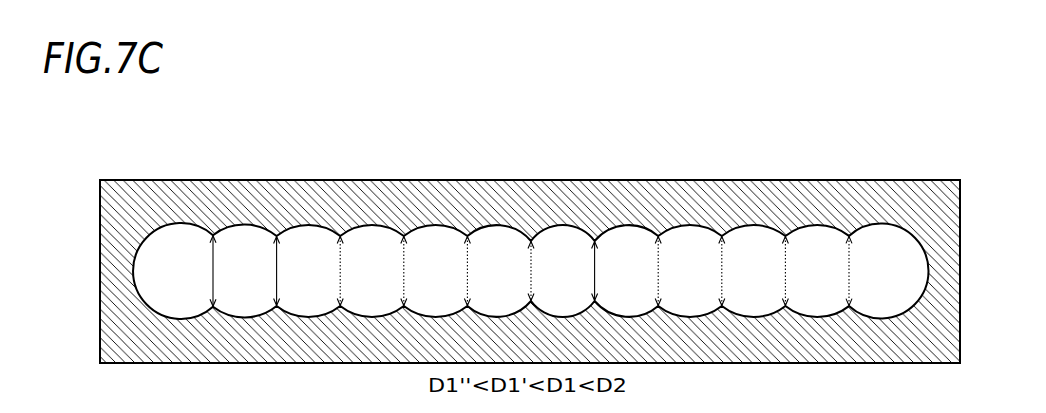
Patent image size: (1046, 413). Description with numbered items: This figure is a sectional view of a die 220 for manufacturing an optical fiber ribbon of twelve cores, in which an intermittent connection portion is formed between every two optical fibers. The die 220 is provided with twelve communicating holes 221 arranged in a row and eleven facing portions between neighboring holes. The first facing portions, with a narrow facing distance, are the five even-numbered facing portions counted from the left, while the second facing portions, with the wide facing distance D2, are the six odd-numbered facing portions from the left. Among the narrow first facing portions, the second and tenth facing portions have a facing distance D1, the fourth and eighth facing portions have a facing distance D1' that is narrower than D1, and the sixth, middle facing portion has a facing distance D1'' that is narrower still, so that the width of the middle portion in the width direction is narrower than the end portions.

The die 220 is at (800, 178).
The communicating holes 221 is at (156, 256).
The wide facing distance D2 is at (546, 271).
The facing distance D1 is at (547, 271).
The facing distance D1' is at (549, 271).
The facing distance D1'' is at (552, 271).